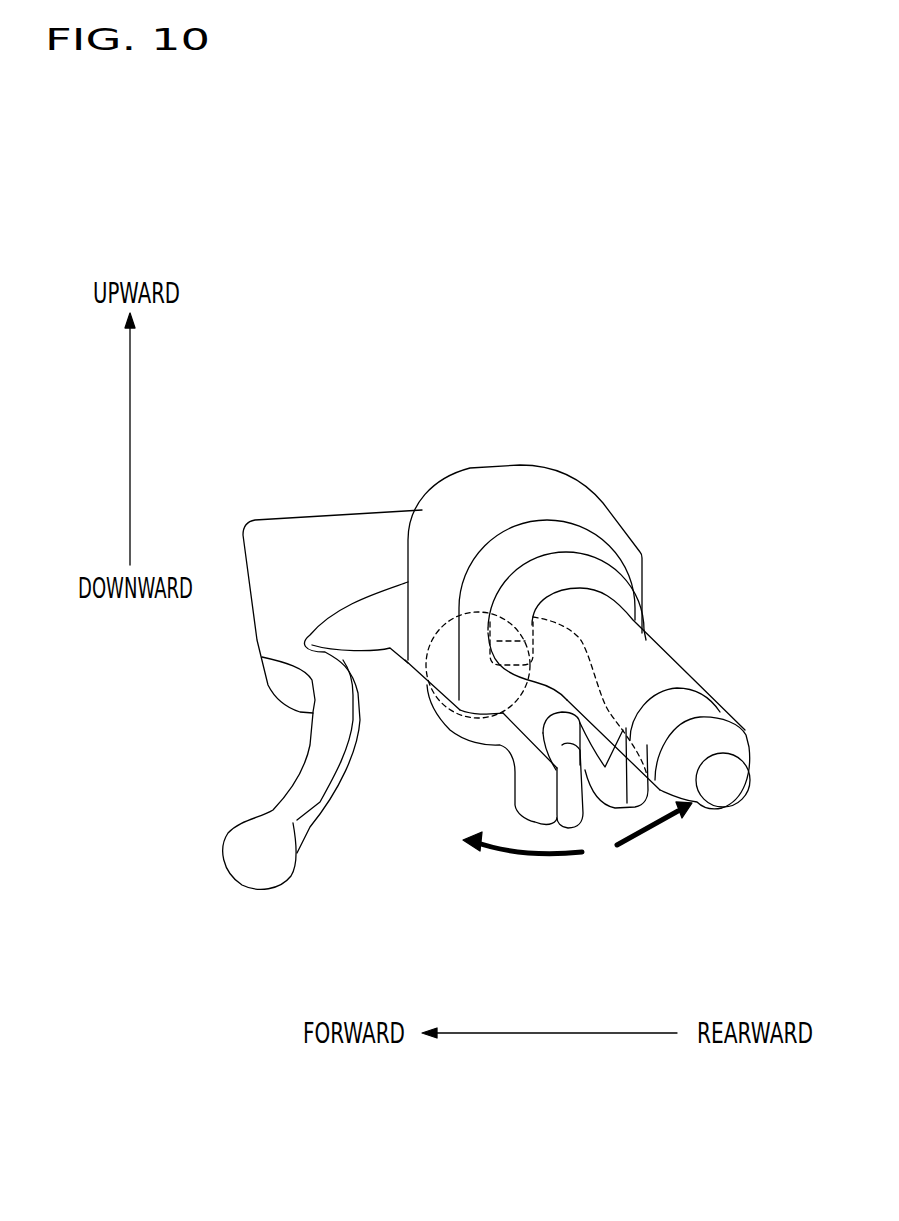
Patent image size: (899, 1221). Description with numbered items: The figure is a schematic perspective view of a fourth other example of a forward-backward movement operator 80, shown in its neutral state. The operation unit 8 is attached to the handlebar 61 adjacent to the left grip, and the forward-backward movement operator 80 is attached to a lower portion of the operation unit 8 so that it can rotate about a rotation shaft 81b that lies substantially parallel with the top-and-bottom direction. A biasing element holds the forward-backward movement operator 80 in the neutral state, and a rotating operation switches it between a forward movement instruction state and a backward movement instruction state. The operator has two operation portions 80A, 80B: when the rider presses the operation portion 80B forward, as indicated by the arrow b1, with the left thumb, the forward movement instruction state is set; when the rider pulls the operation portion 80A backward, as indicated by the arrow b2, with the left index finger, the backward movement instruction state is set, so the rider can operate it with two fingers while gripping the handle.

The operation unit 8 is at (452, 493).
The rotation shaft 81b is at (515, 633).
The handlebar 61 is at (643, 640).
The operation portion 80B is at (633, 735).
The forward-backward movement operator 80 is at (432, 728).
The operation portion 80A is at (532, 798).
The arrow b1 is at (527, 855).
The arrow b2 is at (648, 835).